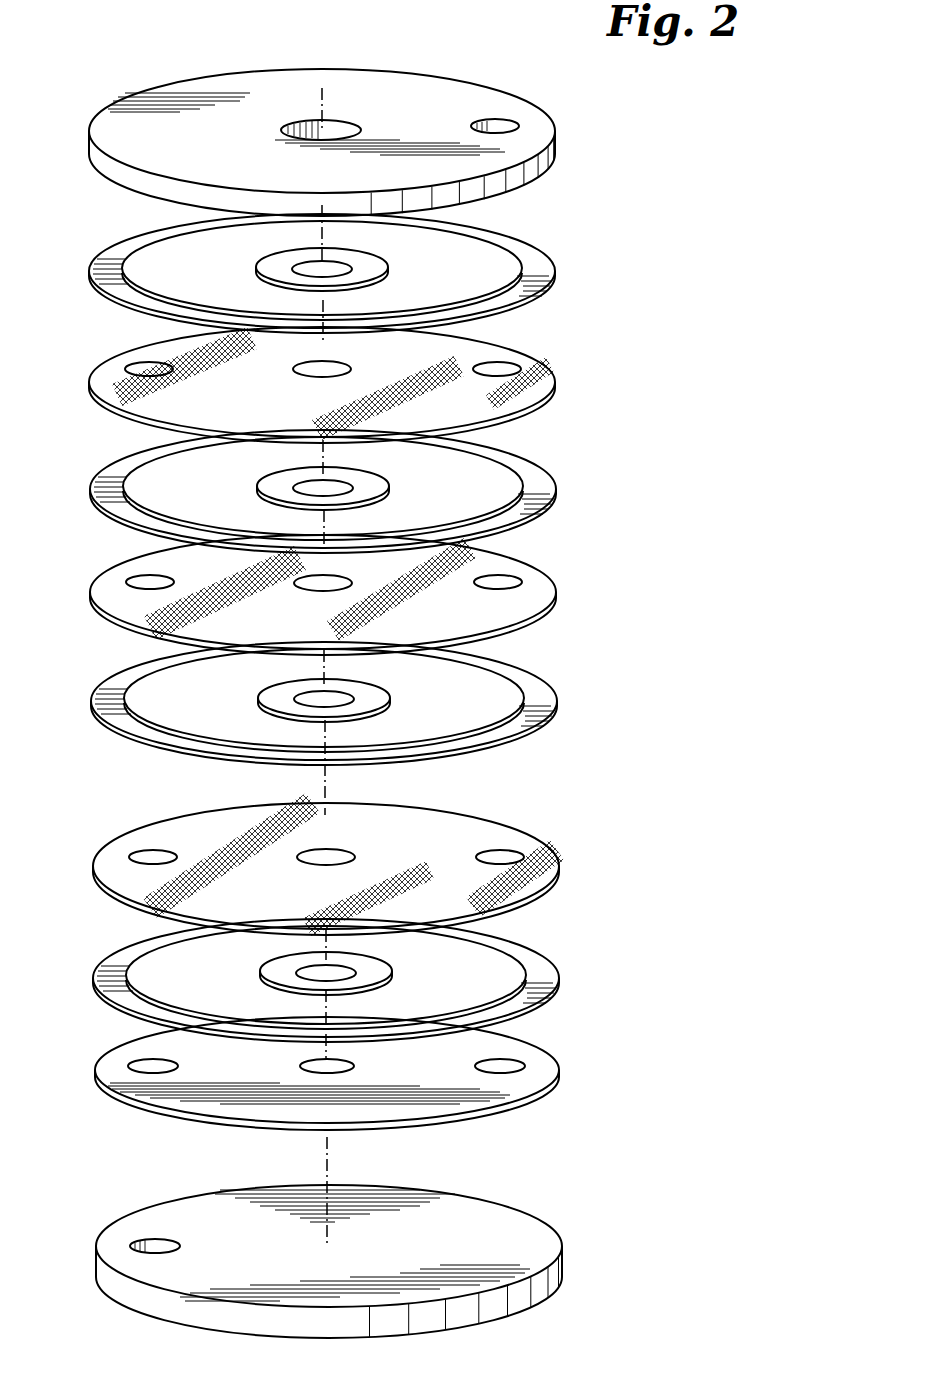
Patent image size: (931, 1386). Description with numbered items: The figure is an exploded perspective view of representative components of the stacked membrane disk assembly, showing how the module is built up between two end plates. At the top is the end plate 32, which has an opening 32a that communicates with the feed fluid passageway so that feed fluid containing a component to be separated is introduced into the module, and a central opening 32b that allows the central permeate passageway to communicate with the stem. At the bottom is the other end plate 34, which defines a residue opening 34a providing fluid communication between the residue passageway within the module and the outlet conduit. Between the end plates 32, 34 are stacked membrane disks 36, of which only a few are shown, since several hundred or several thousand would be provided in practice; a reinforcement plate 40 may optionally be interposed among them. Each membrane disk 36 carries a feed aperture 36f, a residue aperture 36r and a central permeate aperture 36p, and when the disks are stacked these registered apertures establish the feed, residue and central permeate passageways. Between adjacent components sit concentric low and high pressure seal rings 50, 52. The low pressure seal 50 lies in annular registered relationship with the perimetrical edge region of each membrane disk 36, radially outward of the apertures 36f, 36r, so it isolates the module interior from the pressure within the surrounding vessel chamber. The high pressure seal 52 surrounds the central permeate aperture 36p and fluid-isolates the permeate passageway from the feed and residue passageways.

The end plate 32 is at (208, 155).
The opening 32a is at (505, 122).
The opening 32b is at (334, 126).
The low pressure seal ring 50 is at (527, 252).
The high pressure seal ring 52 is at (388, 268).
The membrane disk 36 is at (243, 410).
The residue aperture 36r is at (133, 368).
The central permeate aperture 36p is at (316, 375).
The feed aperture 36f is at (500, 362).
The reinforcement plate 40 is at (405, 1081).
The end plate 34 is at (266, 1257).
The residue opening 34a is at (150, 1240).